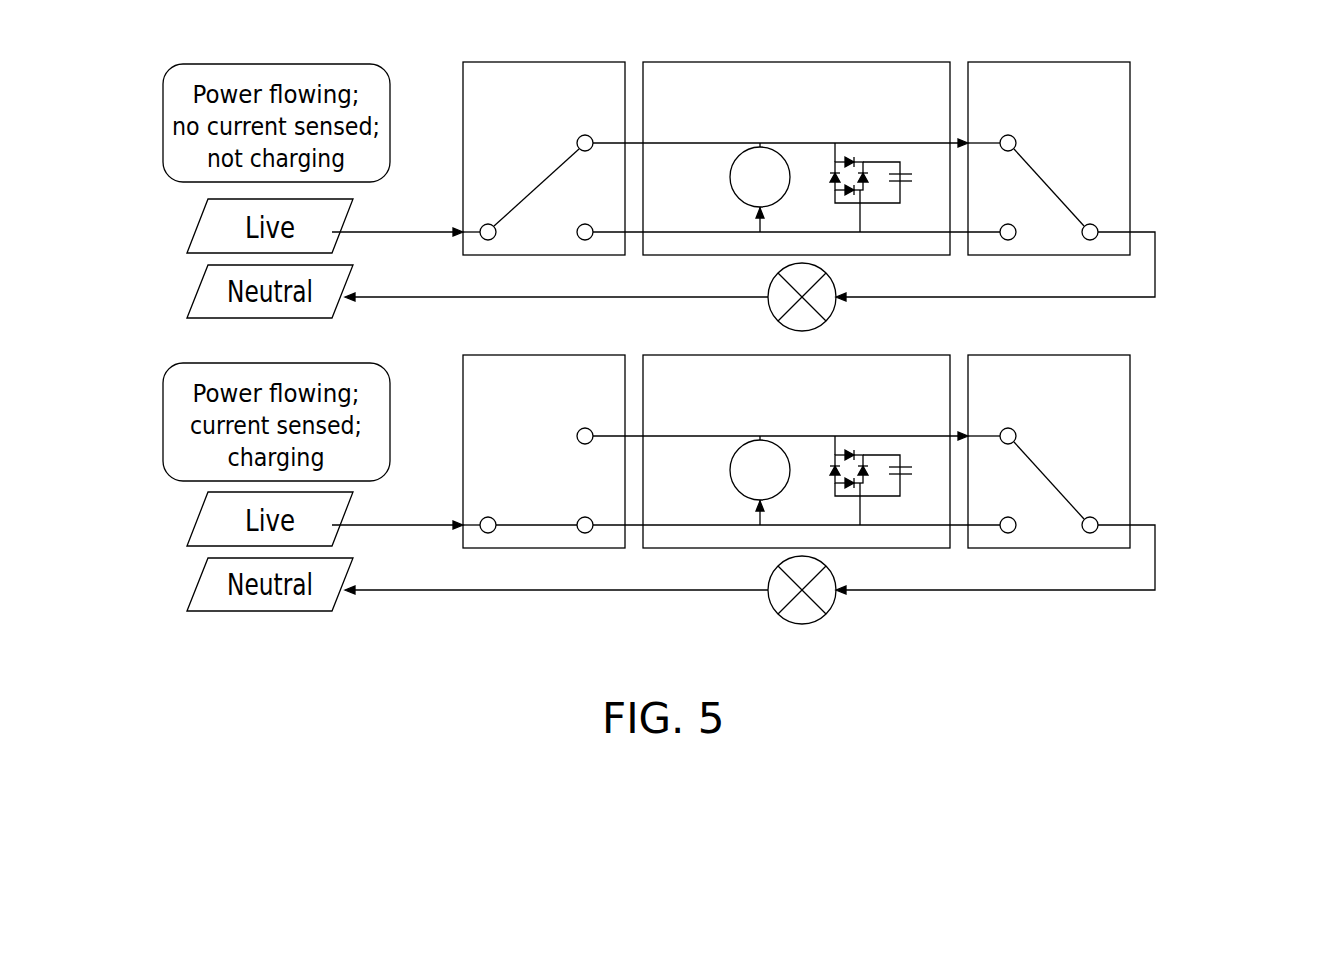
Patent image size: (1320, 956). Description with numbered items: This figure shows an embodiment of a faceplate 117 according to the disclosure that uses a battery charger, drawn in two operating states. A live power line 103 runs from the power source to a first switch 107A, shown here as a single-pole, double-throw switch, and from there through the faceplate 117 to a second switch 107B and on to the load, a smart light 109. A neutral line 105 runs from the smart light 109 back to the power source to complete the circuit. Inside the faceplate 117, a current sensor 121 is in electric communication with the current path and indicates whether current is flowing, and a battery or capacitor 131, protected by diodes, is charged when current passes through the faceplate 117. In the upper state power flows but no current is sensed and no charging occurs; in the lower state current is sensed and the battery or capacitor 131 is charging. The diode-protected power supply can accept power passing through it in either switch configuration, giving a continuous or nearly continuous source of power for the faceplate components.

The live power line 103 is at (402, 232).
The neutral line 105 is at (1155, 273).
The switch 107A is at (510, 62).
The switch 107B is at (1035, 62).
The smart light 109 is at (826, 266).
The faceplate 117 is at (685, 62).
The current sensor 121 is at (730, 172).
The battery or capacitor 131 is at (877, 162).